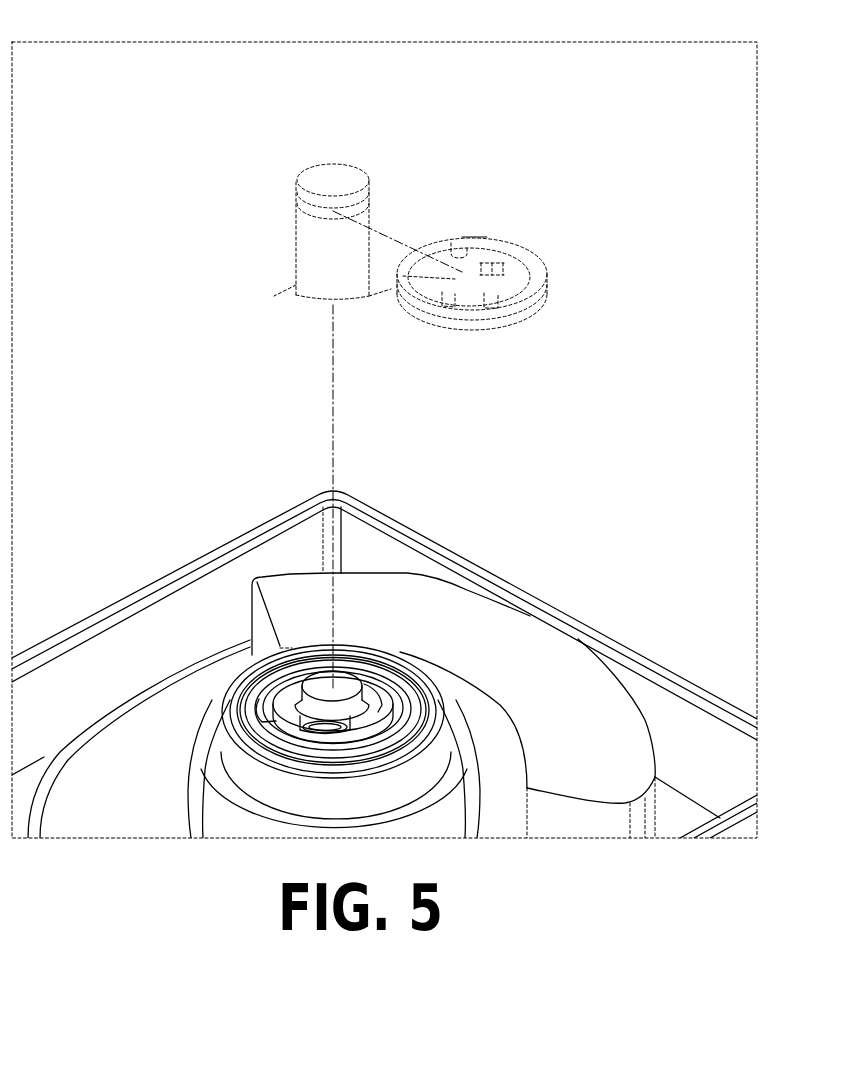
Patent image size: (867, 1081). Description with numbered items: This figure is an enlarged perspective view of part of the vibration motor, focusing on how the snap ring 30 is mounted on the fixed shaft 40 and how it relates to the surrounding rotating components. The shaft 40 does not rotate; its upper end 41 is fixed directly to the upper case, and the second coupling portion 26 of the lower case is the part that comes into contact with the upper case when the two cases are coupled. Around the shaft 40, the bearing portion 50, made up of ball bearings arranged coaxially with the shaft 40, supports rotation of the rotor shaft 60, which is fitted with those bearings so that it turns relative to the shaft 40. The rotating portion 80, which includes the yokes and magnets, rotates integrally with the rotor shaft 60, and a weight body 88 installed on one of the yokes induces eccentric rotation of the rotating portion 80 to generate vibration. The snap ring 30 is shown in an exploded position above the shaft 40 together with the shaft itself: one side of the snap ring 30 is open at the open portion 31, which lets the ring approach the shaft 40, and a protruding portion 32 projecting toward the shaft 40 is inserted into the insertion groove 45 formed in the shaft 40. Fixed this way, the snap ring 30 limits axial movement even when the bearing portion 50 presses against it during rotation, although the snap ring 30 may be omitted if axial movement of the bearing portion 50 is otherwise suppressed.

The second coupling portion 26 is at (250, 525).
The snap ring 30 is at (367, 672).
The open portion 31 is at (455, 252).
The protruding portion 32 is at (497, 293).
The shaft 40 is at (264, 419).
The upper end 41 is at (295, 196).
The insertion groove 45 is at (310, 217).
The bearing portion 50 is at (437, 686).
The rotor shaft 60 is at (230, 753).
The rotating portion 80 is at (107, 727).
The weight body 88 is at (600, 689).